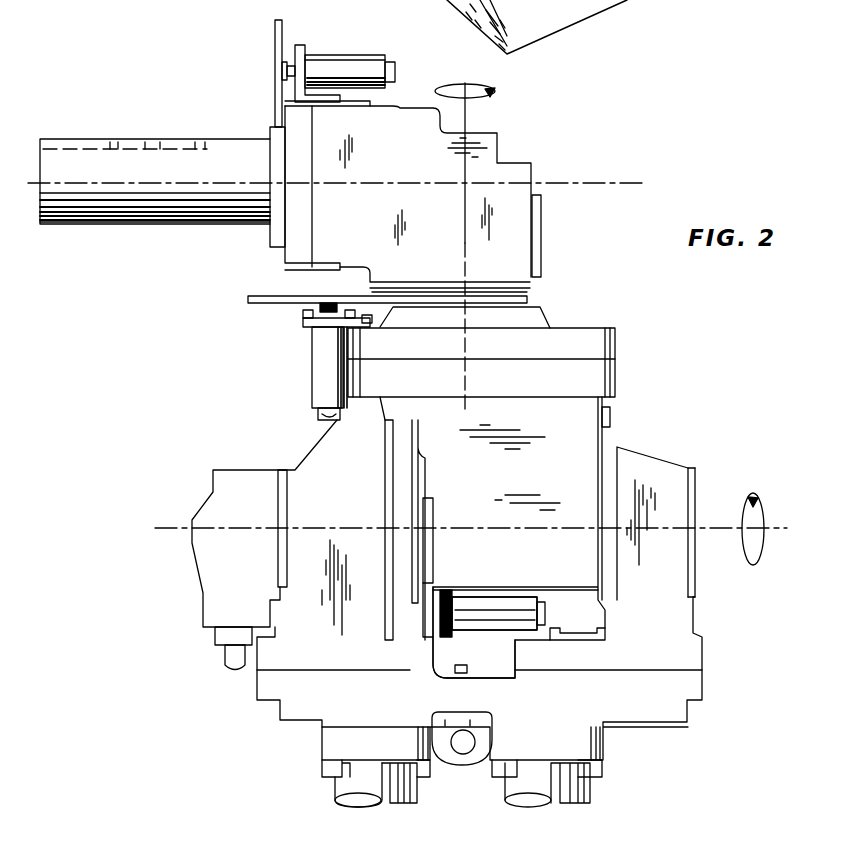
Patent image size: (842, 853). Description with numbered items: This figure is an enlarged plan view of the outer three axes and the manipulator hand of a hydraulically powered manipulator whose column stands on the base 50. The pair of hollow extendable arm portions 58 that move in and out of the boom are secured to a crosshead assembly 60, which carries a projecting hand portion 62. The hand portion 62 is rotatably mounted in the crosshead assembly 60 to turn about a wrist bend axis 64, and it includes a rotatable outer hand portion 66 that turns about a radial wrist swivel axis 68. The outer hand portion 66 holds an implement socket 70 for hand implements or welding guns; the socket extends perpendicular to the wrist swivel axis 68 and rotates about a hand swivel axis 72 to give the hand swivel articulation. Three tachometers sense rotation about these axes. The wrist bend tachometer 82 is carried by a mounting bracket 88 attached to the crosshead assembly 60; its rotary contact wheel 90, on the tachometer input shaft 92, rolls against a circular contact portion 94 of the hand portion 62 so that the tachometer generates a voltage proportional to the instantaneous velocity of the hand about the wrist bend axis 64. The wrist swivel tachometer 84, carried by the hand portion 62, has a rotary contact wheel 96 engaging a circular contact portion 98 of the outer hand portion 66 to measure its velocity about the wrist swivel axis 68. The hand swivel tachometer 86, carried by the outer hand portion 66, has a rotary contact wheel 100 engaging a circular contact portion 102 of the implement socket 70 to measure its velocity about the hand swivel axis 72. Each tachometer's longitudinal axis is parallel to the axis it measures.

The base 50 is at (632, 0).
The extendable arm portions 58 is at (350, 778).
The crosshead assembly 60 is at (705, 660).
The hand portion 62 is at (617, 350).
The wrist bend axis 64 is at (772, 528).
The outer hand portion 66 is at (531, 165).
The wrist swivel axis 68 is at (470, 120).
The implement socket 70 is at (206, 138).
The hand swivel axis 72 is at (620, 183).
The wrist bend tachometer 82 is at (560, 613).
The wrist swivel tachometer 84 is at (297, 350).
The hand swivel tachometer 86 is at (308, 36).
The mounting bracket 88 is at (452, 657).
The rotary contact wheel 90 is at (420, 640).
The tachometer input shaft 92 is at (437, 588).
The circular contact portion 94 is at (433, 567).
The rotary contact wheel 96 is at (262, 296).
The circular contact portion 98 is at (517, 302).
The rotary contact wheel 100 is at (273, 30).
The circular contact portion 102 is at (272, 128).